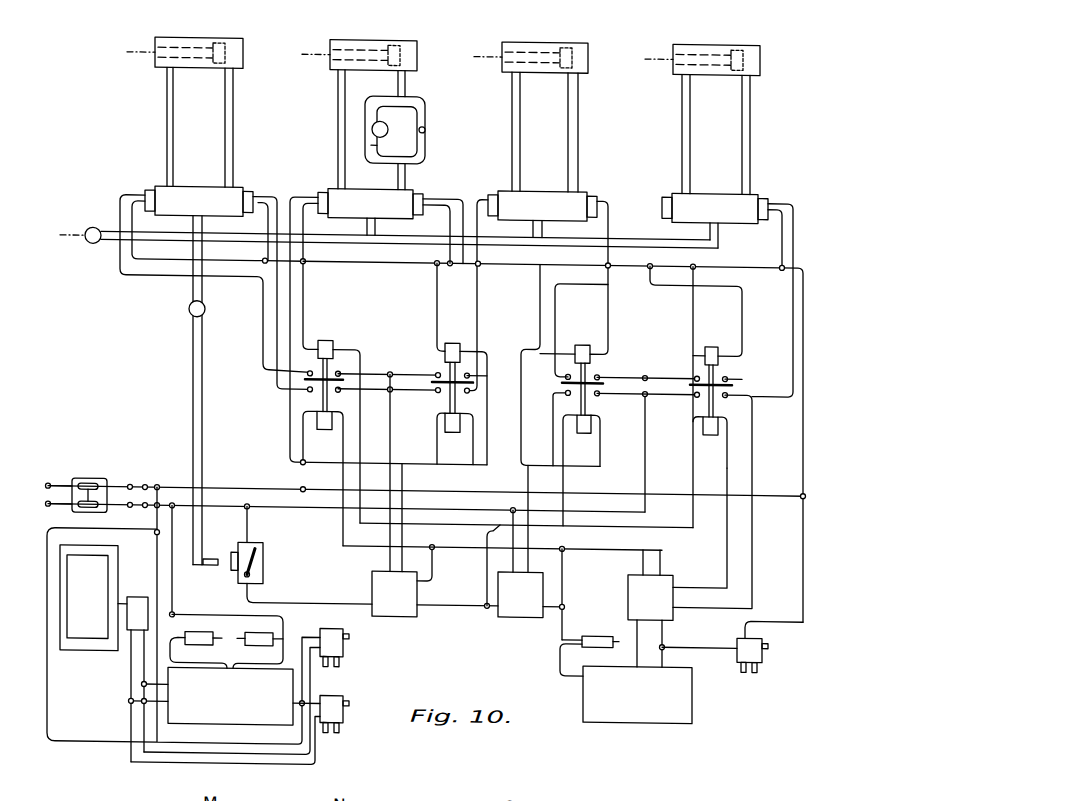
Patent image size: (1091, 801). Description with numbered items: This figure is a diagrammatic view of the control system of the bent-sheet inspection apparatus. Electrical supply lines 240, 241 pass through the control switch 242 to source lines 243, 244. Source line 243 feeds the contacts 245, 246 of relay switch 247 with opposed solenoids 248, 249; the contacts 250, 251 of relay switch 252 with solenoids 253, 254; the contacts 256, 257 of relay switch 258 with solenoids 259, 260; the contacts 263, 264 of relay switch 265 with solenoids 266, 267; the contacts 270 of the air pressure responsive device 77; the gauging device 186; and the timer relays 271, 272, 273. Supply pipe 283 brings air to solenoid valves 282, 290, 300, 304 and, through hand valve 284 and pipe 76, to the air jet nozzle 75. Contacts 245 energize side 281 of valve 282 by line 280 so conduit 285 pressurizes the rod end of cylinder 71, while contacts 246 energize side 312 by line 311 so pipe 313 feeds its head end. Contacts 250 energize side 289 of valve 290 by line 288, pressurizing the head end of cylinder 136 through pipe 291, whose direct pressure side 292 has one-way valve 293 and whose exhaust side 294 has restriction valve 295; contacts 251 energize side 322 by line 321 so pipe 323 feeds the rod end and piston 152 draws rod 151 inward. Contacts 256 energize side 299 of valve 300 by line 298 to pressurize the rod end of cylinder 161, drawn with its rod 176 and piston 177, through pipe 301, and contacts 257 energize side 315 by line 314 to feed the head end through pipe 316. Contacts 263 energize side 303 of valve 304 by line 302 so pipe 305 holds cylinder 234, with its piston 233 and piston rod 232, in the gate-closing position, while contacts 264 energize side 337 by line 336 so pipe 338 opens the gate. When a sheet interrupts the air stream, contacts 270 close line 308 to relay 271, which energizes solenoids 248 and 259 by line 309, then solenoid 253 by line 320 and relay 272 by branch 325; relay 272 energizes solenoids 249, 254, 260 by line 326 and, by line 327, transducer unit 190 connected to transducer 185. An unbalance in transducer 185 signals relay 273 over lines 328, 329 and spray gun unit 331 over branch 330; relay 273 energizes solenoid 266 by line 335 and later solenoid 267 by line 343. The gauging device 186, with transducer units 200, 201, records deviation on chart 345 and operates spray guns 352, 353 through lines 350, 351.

The cylinder 71 is at (180, 43).
The cylinder 136 is at (392, 45).
The rod 151 is at (312, 48).
The piston 152 is at (382, 45).
The cylinder 161 is at (530, 44).
The piston rod 176 is at (488, 48).
The piston 177 is at (568, 45).
The piston rod 232 is at (660, 48).
The piston 233 is at (740, 45).
The cylinder 234 is at (703, 44).
The conduit 285 is at (166, 112).
The pipe 313 is at (232, 106).
The pipe 323 is at (337, 110).
The pipe 291 is at (411, 83).
The direct pressure side 292 is at (420, 145).
The one-way valve 293 is at (424, 122).
The exhaust side 294 is at (372, 150).
The restriction valve 295 is at (372, 120).
The pipe 301 is at (511, 121).
The pipe 316 is at (577, 115).
The pipe 305 is at (681, 122).
The pipe 338 is at (750, 110).
The side of solenoid valve 281 is at (147, 193).
The solenoid valve 282 is at (199, 201).
The solenoid valve 290 is at (370, 204).
The solenoid valve 300 is at (542, 206).
The solenoid valve 304 is at (715, 208).
The side of valve 312 is at (248, 188).
The line 311 is at (272, 204).
The line 321 is at (292, 190).
The side of solenoid valve 322 is at (320, 190).
The side of solenoid valve 289 is at (420, 190).
The side of solenoid valve 299 is at (490, 190).
The side of solenoid valve 315 is at (592, 188).
The side of solenoid valve 303 is at (660, 192).
The side of valve 337 is at (762, 190).
The line 336 is at (794, 213).
The pipe 283 is at (88, 244).
The hand valve 284 is at (189, 308).
The line 280 is at (262, 305).
The source line 244 is at (370, 260).
The pipe 76 is at (203, 357).
The air jet nozzle 75 is at (212, 555).
The solenoid 248 is at (335, 331).
The solenoid 249 is at (319, 478).
The relay switch 247 is at (308, 404).
The contacts 245 is at (373, 364).
The contacts 246 is at (373, 400).
The line 309 is at (340, 341).
The line 326 is at (603, 475).
The solenoid 253 is at (451, 340).
The solenoid 254 is at (450, 439).
The contacts 250 is at (436, 372).
The contacts 251 is at (462, 394).
The relay switch 252 is at (432, 399).
The line 288 is at (446, 318).
The source line 243 is at (388, 427).
The line 298 is at (538, 295).
The solenoid 259 is at (583, 340).
The solenoid 260 is at (577, 471).
The relay switch 258 is at (569, 410).
The contacts 256 is at (598, 372).
The contacts 257 is at (598, 390).
The line 314 is at (572, 279).
The solenoid 266 is at (710, 340).
The solenoid 267 is at (704, 445).
The relay switch 265 is at (695, 421).
The contacts 263 is at (690, 369).
The contacts 264 is at (692, 390).
The line 302 is at (650, 281).
The line 335 is at (753, 556).
The line 343 is at (712, 507).
The timer relay 271 is at (394, 594).
The timer relay 272 is at (520, 541).
The timer relay 273 is at (650, 585).
The line 308 is at (327, 598).
The line 320 is at (448, 601).
The branch 325 is at (486, 610).
The line 327 is at (555, 618).
The linear dimension transducer unit 190 is at (594, 628).
The circuit line 329 is at (636, 652).
The circuit line 328 is at (663, 630).
The branch 330 is at (703, 645).
The spray gun unit 331 is at (755, 645).
The linear displacement transducer 185 is at (699, 703).
The control switch 242 is at (98, 467).
The electrical supply line 241 is at (52, 482).
The electrical supply line 240 is at (48, 517).
The chart 345 is at (86, 630).
The gauging device 186 is at (152, 711).
The linear displacement transducer unit 200 is at (196, 640).
The linear displacement transducer unit 201 is at (254, 638).
The air pressure responsive device 77 is at (263, 550).
The contacts 270 is at (258, 562).
The spray gun 352 is at (335, 646).
The circuit line 350 is at (305, 676).
The spray gun 353 is at (335, 712).
The circuit line 351 is at (313, 745).